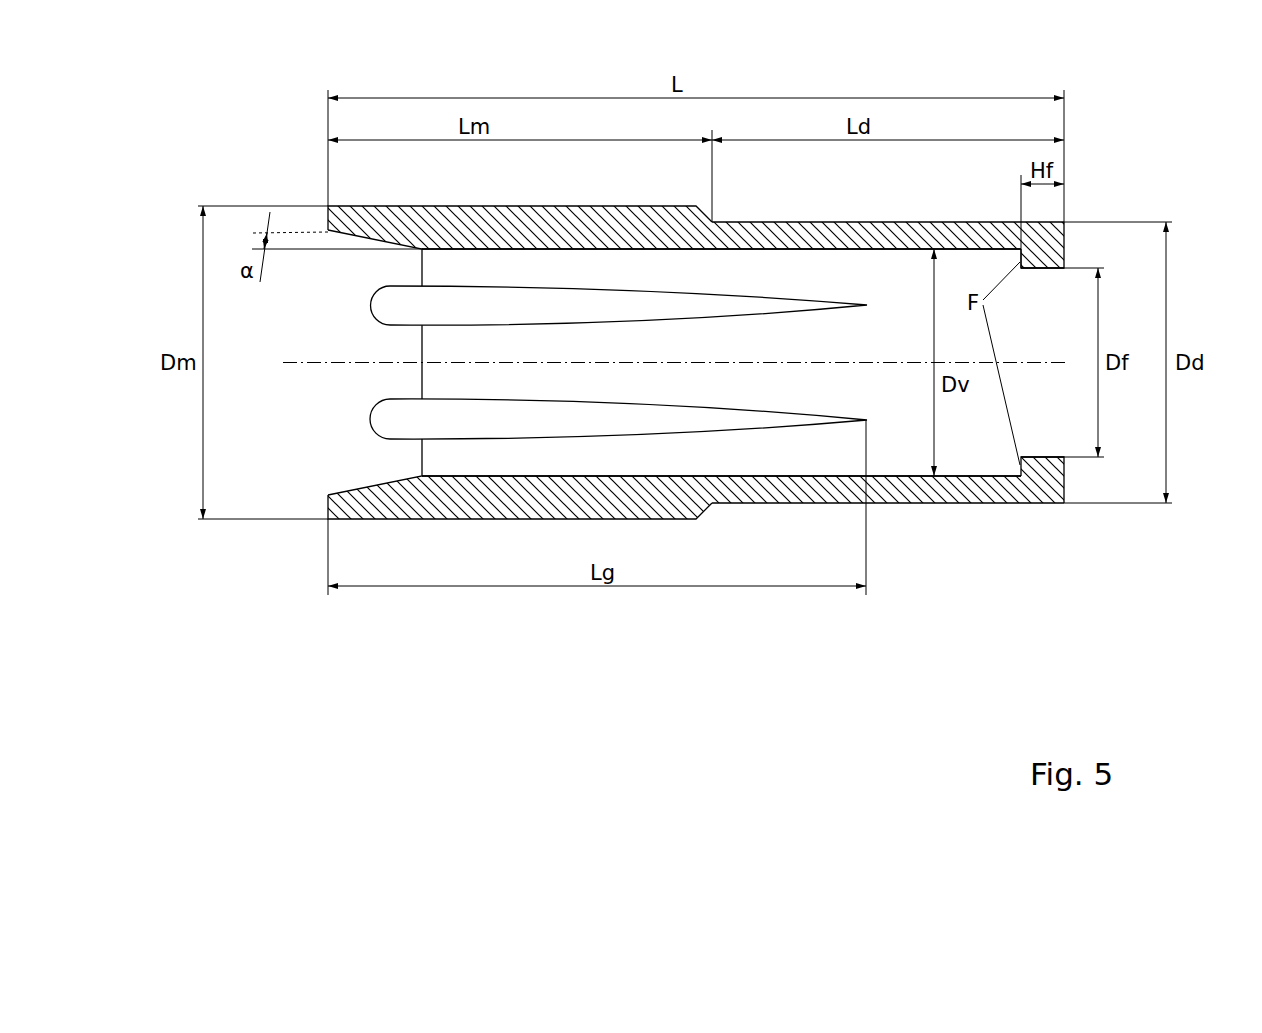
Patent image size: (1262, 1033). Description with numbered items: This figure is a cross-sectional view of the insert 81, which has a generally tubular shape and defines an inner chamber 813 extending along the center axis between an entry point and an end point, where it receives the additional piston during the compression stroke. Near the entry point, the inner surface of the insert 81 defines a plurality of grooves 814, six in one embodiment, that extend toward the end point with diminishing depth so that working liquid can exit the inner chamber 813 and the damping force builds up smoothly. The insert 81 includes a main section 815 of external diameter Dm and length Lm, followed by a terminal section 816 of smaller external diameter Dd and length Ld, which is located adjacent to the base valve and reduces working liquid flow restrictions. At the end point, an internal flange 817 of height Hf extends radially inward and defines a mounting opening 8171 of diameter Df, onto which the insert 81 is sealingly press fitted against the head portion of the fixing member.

The insert 81 is at (715, 389).
The inner chamber 813 is at (977, 448).
The grooves 814 is at (435, 492).
The main section 815 is at (398, 205).
The terminal section 816 is at (903, 504).
The internal flange 817 is at (1052, 504).
The mounting opening 8171 is at (1036, 303).